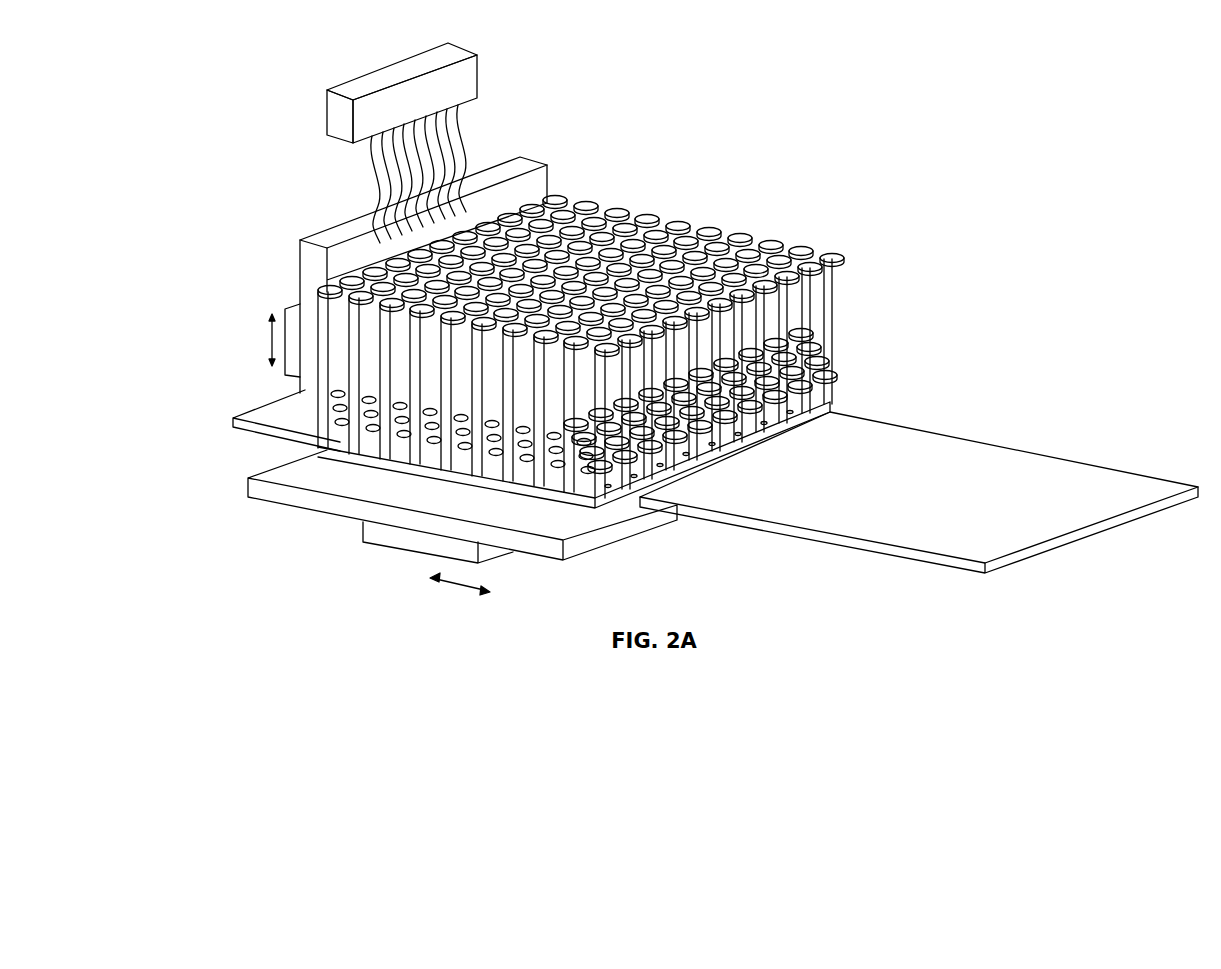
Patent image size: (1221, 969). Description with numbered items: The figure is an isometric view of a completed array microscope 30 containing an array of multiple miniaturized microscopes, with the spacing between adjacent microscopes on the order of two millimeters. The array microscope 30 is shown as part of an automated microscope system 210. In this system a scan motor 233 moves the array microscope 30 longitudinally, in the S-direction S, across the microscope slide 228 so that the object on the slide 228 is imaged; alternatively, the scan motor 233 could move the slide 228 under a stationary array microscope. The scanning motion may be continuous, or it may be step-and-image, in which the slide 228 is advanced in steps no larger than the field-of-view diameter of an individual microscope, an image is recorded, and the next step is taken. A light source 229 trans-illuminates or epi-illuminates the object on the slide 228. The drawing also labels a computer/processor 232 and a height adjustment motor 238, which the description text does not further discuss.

The automated microscope system 210 is at (803, 161).
The computer/processor 232 is at (478, 72).
The height adjustment motor 238 is at (300, 302).
The array microscope (AM) 30 is at (692, 220).
The microscope slide 228 is at (1057, 455).
The light source 229 is at (262, 500).
The scan motor 233 is at (380, 543).
The S-direction S is at (468, 594).